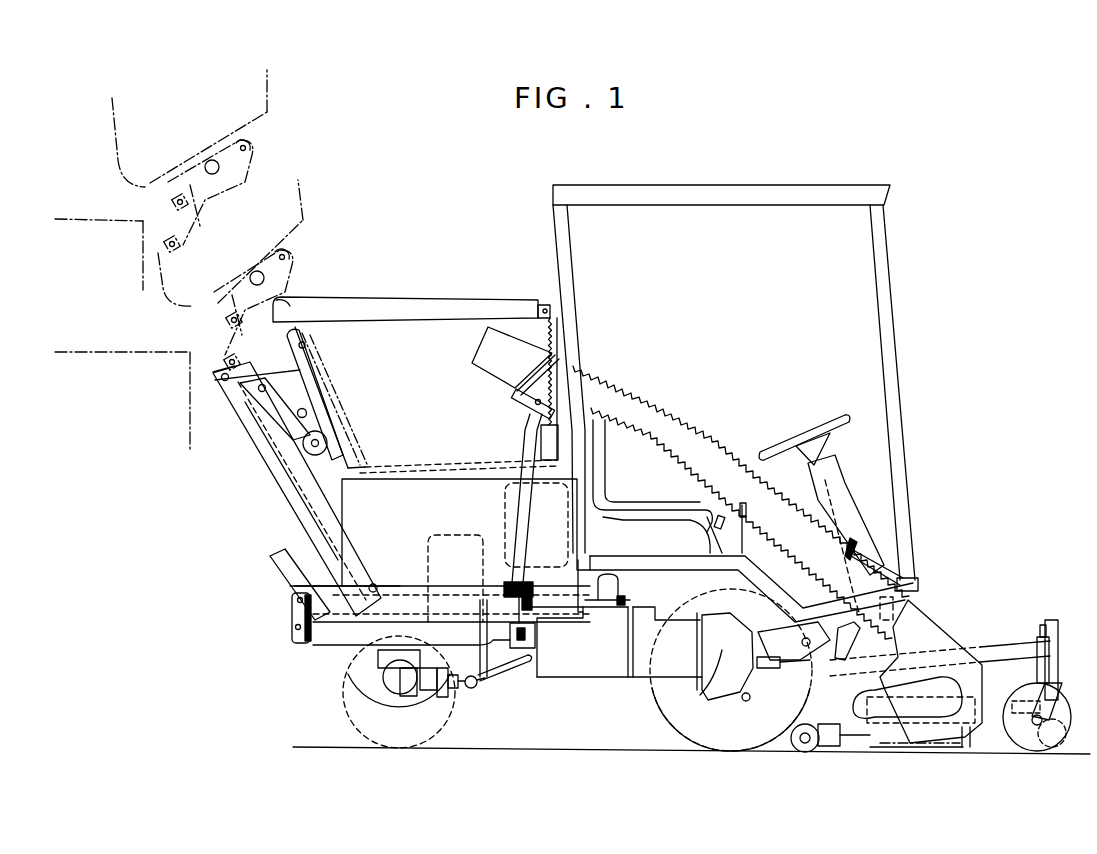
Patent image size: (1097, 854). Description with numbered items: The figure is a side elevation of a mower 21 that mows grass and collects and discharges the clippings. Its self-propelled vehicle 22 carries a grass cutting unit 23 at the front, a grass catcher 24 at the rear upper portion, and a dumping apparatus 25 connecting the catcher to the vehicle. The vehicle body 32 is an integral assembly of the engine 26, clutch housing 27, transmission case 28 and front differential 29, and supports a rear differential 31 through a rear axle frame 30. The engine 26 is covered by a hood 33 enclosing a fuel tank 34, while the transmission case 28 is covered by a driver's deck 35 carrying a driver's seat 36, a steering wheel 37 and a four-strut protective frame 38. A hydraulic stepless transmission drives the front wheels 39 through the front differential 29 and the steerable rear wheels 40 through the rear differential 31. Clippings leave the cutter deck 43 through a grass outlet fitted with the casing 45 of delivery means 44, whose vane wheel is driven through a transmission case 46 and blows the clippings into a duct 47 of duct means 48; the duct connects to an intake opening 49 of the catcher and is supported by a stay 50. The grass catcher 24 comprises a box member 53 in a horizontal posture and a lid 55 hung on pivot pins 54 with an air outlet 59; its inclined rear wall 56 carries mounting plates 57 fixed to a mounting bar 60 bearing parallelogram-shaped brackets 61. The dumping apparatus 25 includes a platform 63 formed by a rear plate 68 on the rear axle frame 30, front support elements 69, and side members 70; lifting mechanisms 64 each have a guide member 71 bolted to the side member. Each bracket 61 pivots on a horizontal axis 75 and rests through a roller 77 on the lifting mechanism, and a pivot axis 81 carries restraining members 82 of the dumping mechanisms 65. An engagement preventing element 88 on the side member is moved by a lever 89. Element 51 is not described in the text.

The mower 21 is at (763, 388).
The self-propelled vehicle 22 is at (650, 730).
The grass cutting unit 23 is at (1010, 635).
The grass catcher 24 is at (276, 86).
The dumping apparatus 25 is at (275, 521).
The engine 26 is at (486, 690).
The clutch housing 27 is at (520, 672).
The transmission case 28 is at (632, 680).
The front differential 29 is at (712, 690).
The rear axle frame 30 is at (417, 695).
The rear differential 31 is at (404, 697).
The vehicle body 32 is at (557, 680).
The hood 33 is at (447, 472).
The fuel tank 34 is at (507, 462).
The driver's deck 35 is at (663, 566).
The driver's seat 36 is at (636, 505).
The steering wheel 37 is at (800, 440).
The four-strut protective frame 38 is at (892, 230).
The front wheels 39 is at (762, 735).
The steerable rear wheels 40 is at (440, 740).
The cutter deck 43 is at (1020, 745).
The delivery means 44 is at (962, 737).
The casing 45 is at (950, 640).
The transmission case 46 is at (927, 677).
The duct 47 is at (708, 435).
The duct means 48 is at (620, 385).
The intake opening 49 is at (505, 343).
The stay 50 is at (522, 543).
The pivot link 51 is at (838, 660).
The box member 53 is at (415, 358).
The pivot pins 54 is at (552, 302).
The lid 55 is at (344, 300).
The rear wall 56 is at (295, 372).
The mounting plates 57 is at (307, 397).
The air outlet 59 is at (276, 326).
The mounting bar 60 is at (335, 410).
The brackets 61 is at (250, 176).
The platform 63 is at (438, 590).
The lifting mechanisms 64 is at (310, 534).
The dumping mechanisms 65 is at (245, 400).
The rear plate 68 is at (298, 643).
The front support elements 69 is at (540, 641).
The side members 70 is at (400, 586).
The guide member 71 is at (305, 515).
The horizontal axis 75 is at (258, 400).
The roller 77 is at (330, 446).
The pivot axis 81 is at (218, 377).
The restraining members 82 is at (270, 455).
The engagement preventing element 88 is at (300, 593).
The lever 89 is at (278, 583).